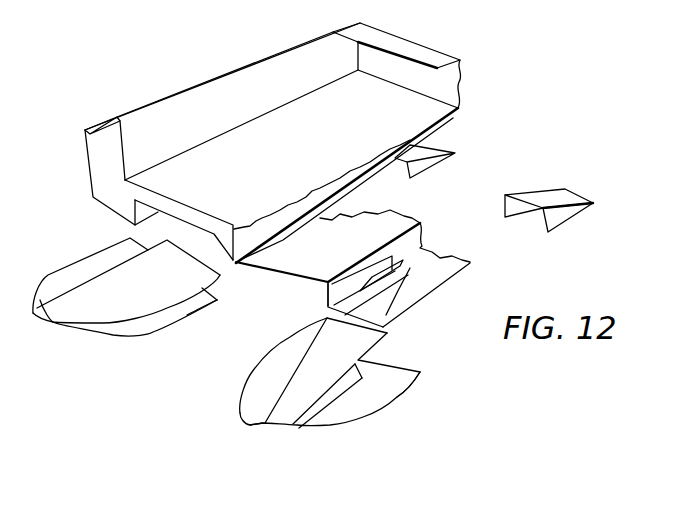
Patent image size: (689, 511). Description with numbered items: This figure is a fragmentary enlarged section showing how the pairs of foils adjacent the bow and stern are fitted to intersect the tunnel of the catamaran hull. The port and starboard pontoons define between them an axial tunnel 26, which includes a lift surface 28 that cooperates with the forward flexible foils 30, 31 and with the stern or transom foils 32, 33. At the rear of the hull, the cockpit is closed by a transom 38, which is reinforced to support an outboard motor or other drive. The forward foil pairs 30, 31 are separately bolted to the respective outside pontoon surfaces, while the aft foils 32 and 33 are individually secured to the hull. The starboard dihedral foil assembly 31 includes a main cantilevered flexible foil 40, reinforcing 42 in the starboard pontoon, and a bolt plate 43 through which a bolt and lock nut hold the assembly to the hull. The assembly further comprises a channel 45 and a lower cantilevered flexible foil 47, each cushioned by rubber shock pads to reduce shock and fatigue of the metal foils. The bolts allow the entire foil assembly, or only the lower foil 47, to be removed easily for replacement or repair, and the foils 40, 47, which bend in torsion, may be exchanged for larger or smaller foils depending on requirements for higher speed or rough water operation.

The axial tunnel 26 is at (293, 273).
The lift surface 28 is at (183, 217).
The fore flexible foil 30 is at (267, 425).
The fore flexible foil 31 is at (53, 325).
The stern foil 32 is at (543, 200).
The stern foil 33 is at (420, 150).
The transom 38 is at (432, 84).
The main cantilevered flexible foil 40 is at (138, 305).
The reinforcing 42 is at (433, 255).
The bolt plate 43 is at (327, 302).
The channel 45 is at (295, 408).
The lower cantilevered flexible foil 47 is at (177, 310).